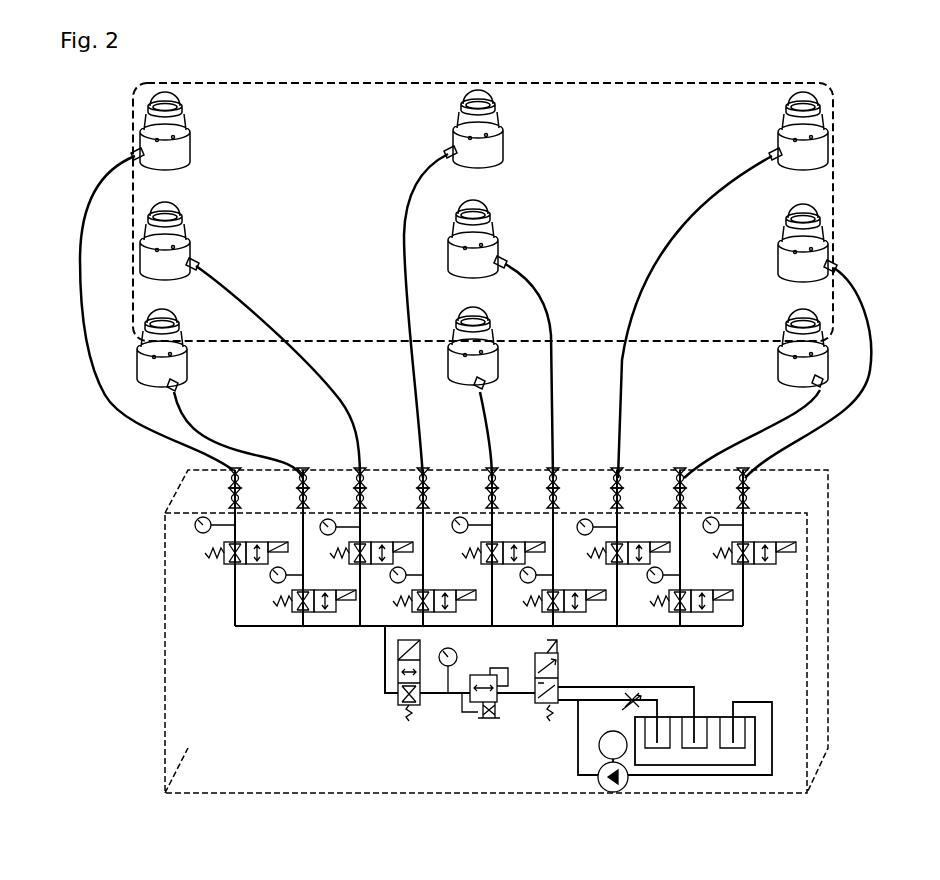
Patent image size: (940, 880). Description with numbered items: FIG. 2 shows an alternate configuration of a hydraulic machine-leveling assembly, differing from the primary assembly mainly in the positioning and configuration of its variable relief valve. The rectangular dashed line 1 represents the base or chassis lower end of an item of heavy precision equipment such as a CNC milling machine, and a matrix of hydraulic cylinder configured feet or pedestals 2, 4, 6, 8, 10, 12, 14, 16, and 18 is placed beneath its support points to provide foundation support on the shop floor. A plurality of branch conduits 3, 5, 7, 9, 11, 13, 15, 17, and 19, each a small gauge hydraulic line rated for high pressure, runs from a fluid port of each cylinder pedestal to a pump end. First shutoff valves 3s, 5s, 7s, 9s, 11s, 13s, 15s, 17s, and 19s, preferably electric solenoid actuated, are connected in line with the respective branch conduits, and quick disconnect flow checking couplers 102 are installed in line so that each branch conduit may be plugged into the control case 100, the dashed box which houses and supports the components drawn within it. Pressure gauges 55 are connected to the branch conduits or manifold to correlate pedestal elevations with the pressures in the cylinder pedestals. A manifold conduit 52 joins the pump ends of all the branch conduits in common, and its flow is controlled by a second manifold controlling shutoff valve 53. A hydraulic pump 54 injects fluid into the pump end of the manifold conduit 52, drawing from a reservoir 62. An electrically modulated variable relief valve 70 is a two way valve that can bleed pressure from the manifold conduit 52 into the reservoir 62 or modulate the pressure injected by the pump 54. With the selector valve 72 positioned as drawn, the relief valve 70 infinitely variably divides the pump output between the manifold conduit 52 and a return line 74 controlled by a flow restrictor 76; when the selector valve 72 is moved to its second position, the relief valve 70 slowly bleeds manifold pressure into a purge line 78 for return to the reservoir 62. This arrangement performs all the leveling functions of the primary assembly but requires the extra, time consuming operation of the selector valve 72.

The base or chassis lower end 1 is at (360, 80).
The hydraulic cylinder configured foot or pedestal 2 is at (198, 146).
The branch conduit 3 is at (80, 235).
The hydraulic cylinder configured foot or pedestal 4 is at (180, 238).
The branch conduit 5 is at (268, 330).
The hydraulic cylinder configured foot or pedestal 6 is at (183, 362).
The branch conduit 7 is at (242, 452).
The hydraulic cylinder configured foot or pedestal 8 is at (498, 150).
The branch conduit 9 is at (404, 225).
The hydraulic cylinder configured foot or pedestal 10 is at (490, 242).
The branch conduit 11 is at (548, 308).
The hydraulic cylinder configured foot or pedestal 12 is at (488, 370).
The branch conduit 13 is at (496, 442).
The hydraulic cylinder configured foot or pedestal 14 is at (818, 152).
The branch conduit 15 is at (728, 203).
The hydraulic cylinder configured foot or pedestal 16 is at (815, 241).
The branch conduit 17 is at (868, 310).
The hydraulic cylinder configured foot or pedestal 18 is at (790, 366).
The branch conduit 19 is at (745, 438).
The first shutoff valve 3s is at (228, 566).
The first shutoff valve 5s is at (372, 566).
The first shutoff valve 7s is at (310, 589).
The first shutoff valve 9s is at (483, 590).
The first shutoff valve 11s is at (566, 590).
The first shutoff valve 13s is at (500, 566).
The first shutoff valve 15s is at (626, 566).
The first shutoff valve 17s is at (756, 566).
The first shutoff valve 19s is at (696, 590).
The manifold conduit 52 is at (265, 626).
The second manifold controlling shutoff valve 53 is at (398, 702).
The hydraulic pump 54 is at (628, 780).
The pressure gauge 55 is at (330, 517).
The reservoir 62 is at (710, 718).
The electrically modulated variable relief valve 70 is at (480, 672).
The selector valve 72 is at (540, 706).
The return line 74 is at (614, 700).
The flow restrictor 76 is at (633, 705).
The purge line 78 is at (572, 685).
The control case 100 is at (162, 565).
The quick disconnect flow checking coupler 102 is at (370, 490).